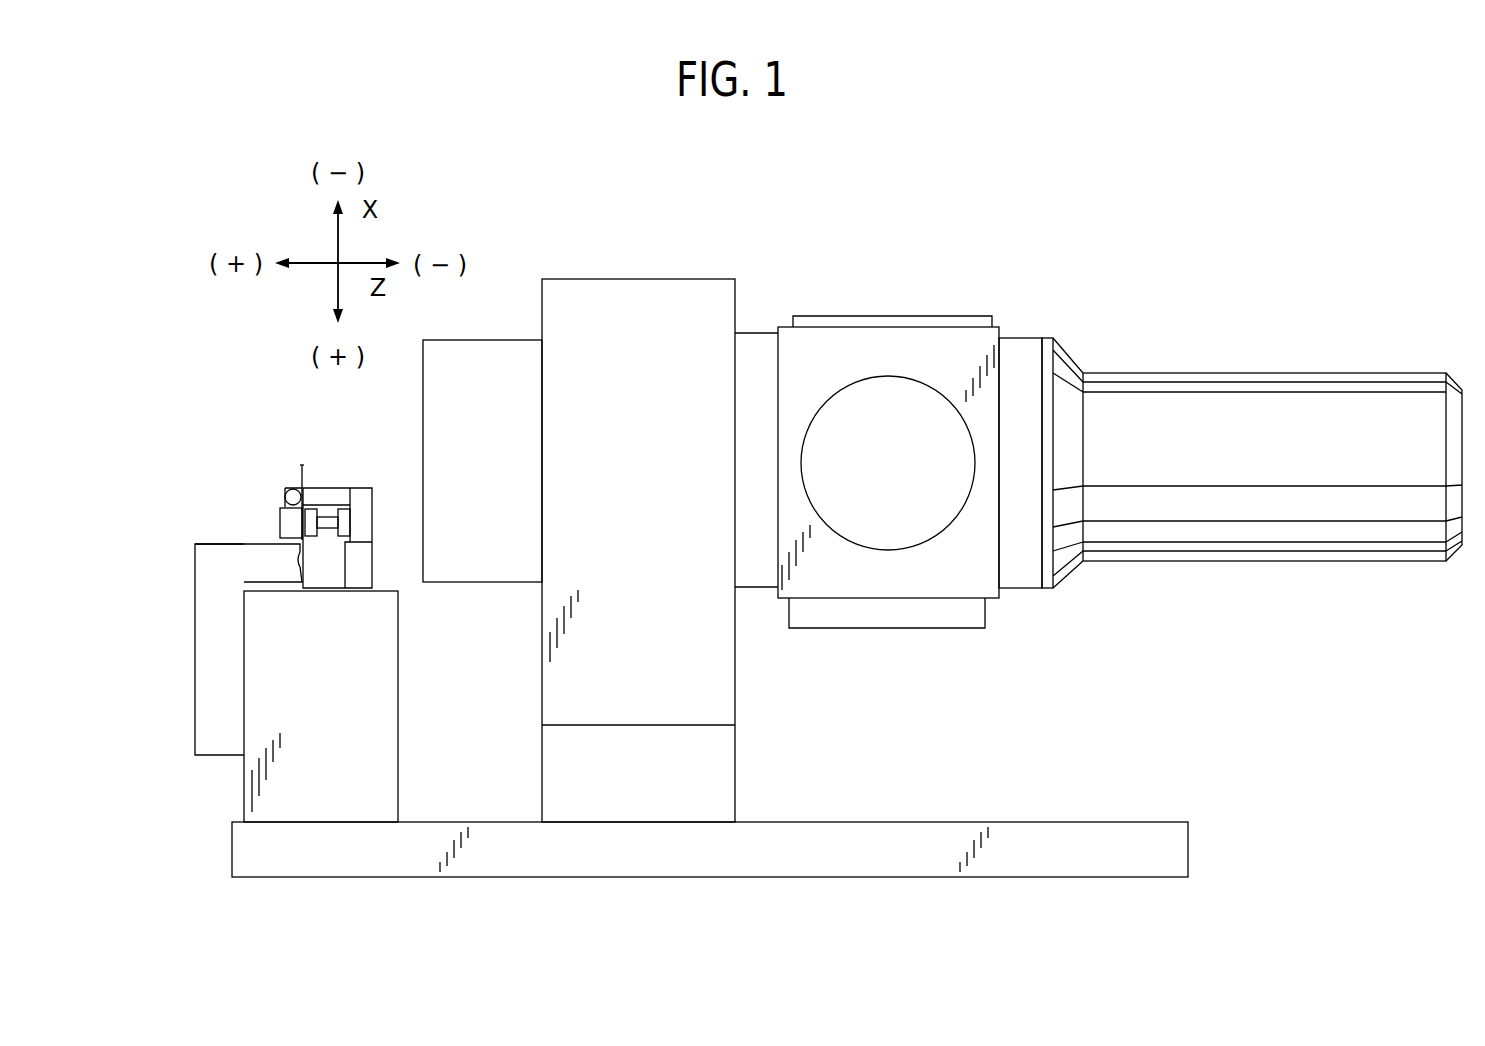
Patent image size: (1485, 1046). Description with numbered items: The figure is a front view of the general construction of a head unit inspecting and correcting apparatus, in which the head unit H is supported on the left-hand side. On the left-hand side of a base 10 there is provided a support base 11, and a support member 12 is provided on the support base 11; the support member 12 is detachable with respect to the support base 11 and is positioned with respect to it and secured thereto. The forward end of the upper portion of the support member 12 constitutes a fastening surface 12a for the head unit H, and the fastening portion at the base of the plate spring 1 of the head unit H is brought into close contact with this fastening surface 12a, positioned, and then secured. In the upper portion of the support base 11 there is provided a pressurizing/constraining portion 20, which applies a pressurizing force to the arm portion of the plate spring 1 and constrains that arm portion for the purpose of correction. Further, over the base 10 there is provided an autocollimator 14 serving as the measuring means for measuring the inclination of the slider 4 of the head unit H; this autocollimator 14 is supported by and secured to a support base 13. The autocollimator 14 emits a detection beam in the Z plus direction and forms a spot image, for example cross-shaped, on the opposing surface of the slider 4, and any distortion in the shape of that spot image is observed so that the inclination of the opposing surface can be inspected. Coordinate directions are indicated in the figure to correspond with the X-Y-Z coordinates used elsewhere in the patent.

The plate spring 1 is at (300, 477).
The slider 4 is at (302, 468).
The head unit H is at (277, 466).
The base 10 is at (865, 843).
The support base 11 is at (367, 733).
The support member 12 is at (212, 747).
The fastening surface 12a is at (300, 567).
The support base 13 is at (708, 666).
The autocollimator 14 is at (1027, 575).
The pressurizing/constraining portion 20 is at (328, 478).